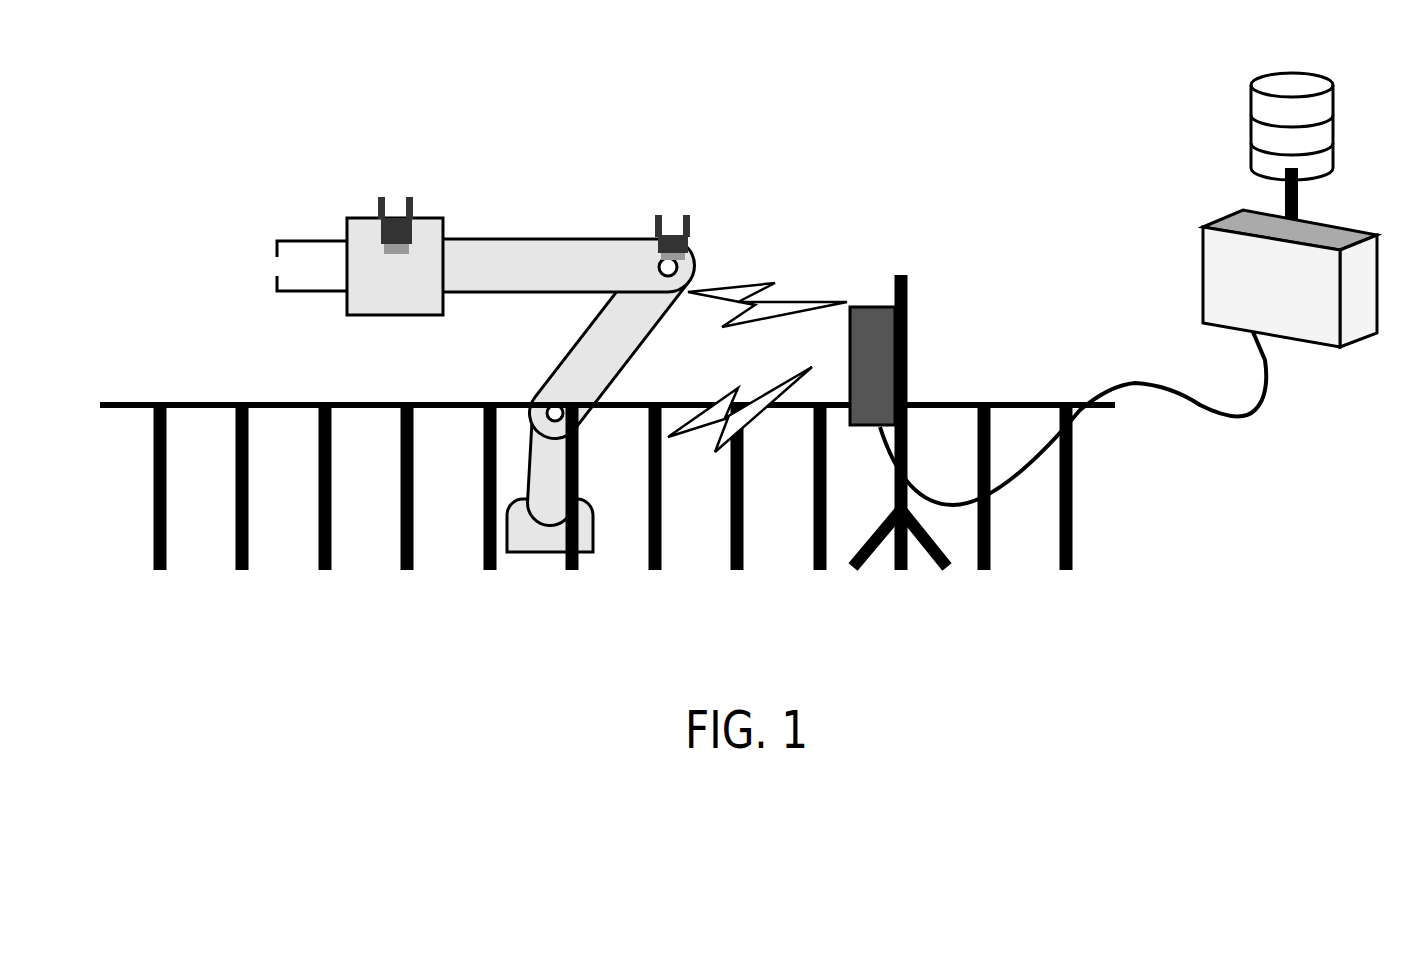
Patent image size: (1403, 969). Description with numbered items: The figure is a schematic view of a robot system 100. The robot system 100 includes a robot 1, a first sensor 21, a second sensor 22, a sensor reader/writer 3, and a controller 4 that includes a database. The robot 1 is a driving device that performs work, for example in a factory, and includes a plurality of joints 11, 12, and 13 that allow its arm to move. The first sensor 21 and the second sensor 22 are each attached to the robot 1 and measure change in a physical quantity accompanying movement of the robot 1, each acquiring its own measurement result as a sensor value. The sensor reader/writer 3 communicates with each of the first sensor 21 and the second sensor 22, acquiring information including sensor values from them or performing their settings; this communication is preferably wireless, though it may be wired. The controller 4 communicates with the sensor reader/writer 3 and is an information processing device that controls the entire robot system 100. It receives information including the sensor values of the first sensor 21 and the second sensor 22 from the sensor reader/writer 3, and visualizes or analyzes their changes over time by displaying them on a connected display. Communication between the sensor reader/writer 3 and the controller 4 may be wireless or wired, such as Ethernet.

The robot system 100 is at (200, 197).
The robot 1 is at (542, 256).
The joint 11 is at (658, 268).
The joint 12 is at (552, 410).
The joint 13 is at (549, 506).
The first sensor 21 is at (689, 247).
The second sensor 22 is at (410, 225).
The sensor reader/writer 3 is at (875, 305).
The controller 4 is at (1375, 126).